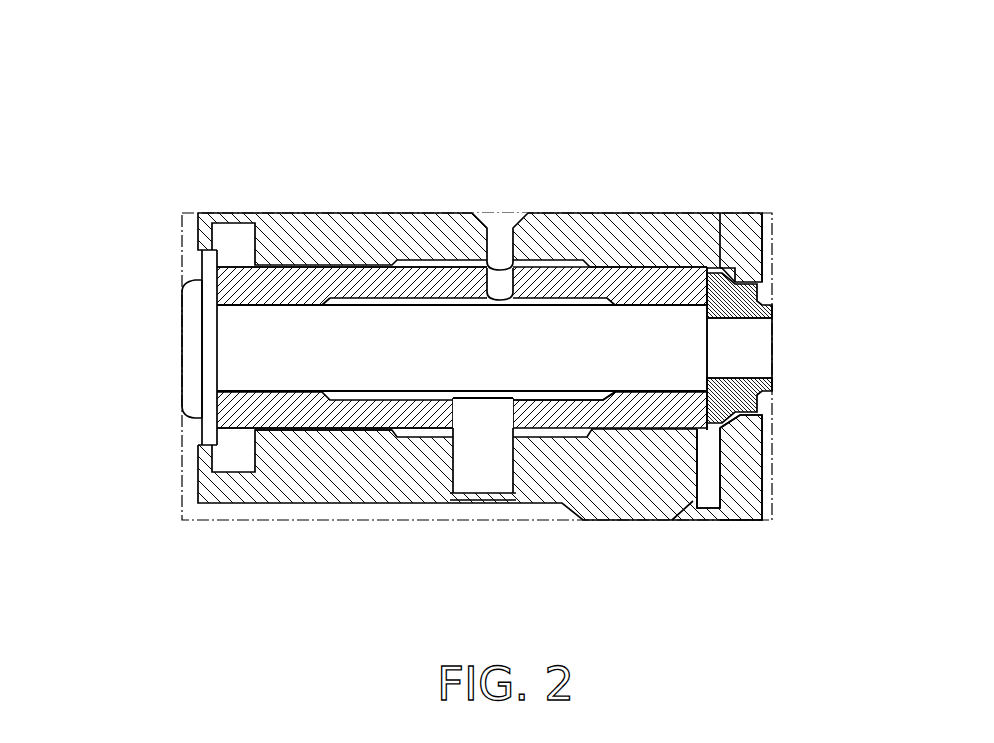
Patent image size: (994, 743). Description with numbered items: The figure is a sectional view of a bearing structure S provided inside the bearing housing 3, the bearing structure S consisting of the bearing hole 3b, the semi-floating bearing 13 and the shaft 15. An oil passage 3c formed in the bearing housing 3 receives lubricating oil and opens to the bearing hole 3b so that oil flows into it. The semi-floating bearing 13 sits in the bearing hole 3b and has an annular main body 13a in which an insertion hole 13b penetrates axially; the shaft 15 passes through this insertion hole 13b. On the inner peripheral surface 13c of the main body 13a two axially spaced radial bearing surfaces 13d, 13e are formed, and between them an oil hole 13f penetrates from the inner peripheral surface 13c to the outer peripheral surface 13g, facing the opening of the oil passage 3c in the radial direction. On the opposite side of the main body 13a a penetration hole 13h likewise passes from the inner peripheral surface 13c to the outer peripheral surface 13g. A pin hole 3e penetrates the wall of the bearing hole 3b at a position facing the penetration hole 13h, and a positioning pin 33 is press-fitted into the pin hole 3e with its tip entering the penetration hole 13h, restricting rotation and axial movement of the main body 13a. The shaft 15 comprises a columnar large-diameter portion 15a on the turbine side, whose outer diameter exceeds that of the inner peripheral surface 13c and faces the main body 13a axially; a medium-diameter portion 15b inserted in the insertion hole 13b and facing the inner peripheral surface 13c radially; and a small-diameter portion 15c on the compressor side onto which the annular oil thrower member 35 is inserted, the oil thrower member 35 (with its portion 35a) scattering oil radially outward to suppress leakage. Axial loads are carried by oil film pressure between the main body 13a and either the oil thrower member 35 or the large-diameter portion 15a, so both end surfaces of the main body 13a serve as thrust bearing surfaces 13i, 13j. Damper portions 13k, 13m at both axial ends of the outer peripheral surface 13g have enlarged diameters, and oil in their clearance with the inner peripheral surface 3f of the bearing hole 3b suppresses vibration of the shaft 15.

The bearing housing 3 is at (637, 217).
The bearing hole 3b is at (725, 433).
The oil passage 3c is at (519, 226).
The pin hole 3e is at (460, 484).
The inner peripheral surface of bearing hole 3f is at (690, 508).
The semi-floating bearing 13 is at (231, 263).
The main body 13a is at (292, 263).
The insertion hole 13b is at (552, 395).
The inner peripheral surface 13c is at (603, 395).
The radial bearing surface 13d is at (282, 390).
The radial bearing surface 13e is at (709, 330).
The oil hole 13f is at (515, 283).
The outer peripheral surface 13g is at (440, 262).
The penetration hole 13h is at (507, 415).
The thrust bearing surface 13i is at (217, 284).
The thrust bearing surface 13j is at (758, 283).
The damper portion 13k is at (317, 430).
The damper portion 13m is at (757, 258).
The shaft 15 is at (474, 361).
The large-diameter portion 15a is at (212, 352).
The medium-diameter portion 15b is at (255, 382).
The small-diameter portion 15c is at (737, 353).
The positioning pin 33 is at (485, 478).
The oil thrower member 35 is at (775, 383).
The end member portion 35a is at (712, 370).
The bearing structure S is at (289, 60).